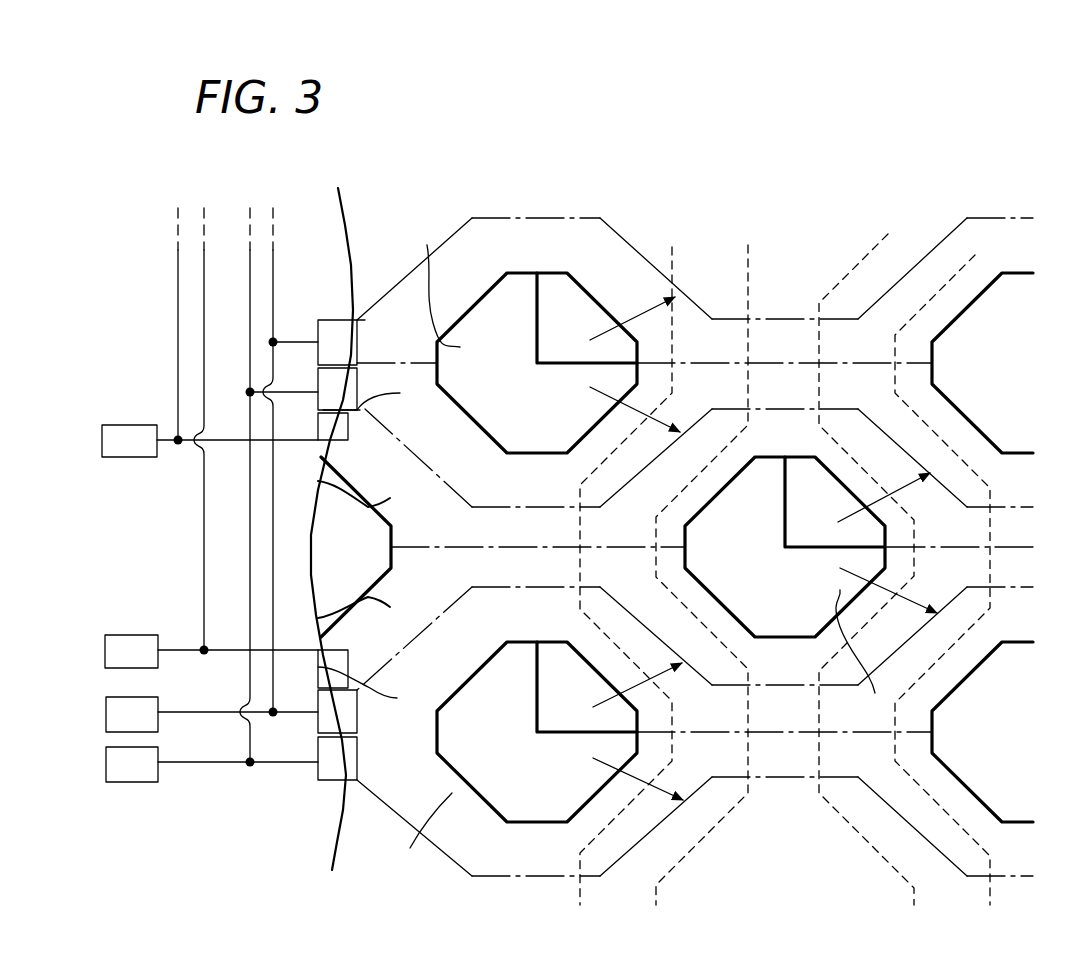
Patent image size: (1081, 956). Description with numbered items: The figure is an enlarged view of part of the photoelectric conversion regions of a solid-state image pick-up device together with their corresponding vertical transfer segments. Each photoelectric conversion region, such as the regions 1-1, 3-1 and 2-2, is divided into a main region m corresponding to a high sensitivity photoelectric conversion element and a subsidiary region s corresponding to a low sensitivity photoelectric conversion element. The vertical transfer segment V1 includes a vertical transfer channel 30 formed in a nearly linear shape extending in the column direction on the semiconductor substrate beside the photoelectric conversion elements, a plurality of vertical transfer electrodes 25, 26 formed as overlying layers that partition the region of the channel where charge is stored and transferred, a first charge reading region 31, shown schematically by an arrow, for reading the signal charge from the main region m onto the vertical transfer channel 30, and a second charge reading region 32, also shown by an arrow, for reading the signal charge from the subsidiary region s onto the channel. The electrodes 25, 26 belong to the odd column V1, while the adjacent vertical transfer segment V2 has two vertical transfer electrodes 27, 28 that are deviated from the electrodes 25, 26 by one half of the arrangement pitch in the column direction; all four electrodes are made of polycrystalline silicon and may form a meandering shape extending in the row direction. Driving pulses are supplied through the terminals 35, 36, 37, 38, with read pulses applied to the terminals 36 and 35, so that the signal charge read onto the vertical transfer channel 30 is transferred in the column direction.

The vertical transfer electrode 25 is at (396, 313).
The vertical transfer electrode 26 is at (318, 422).
The vertical transfer electrode 27 is at (318, 481).
The vertical transfer electrode 28 is at (318, 618).
The vertical transfer channel 30 is at (720, 347).
The first charge reading region 31 is at (618, 392).
The second charge reading region 32 is at (622, 337).
The terminal 35 is at (106, 712).
The terminal 36 is at (106, 762).
The terminal 37 is at (102, 441).
The terminal 38 is at (105, 650).
The photoelectric conversion region 3-1 is at (482, 290).
The photoelectric conversion region 1-1 is at (481, 802).
The photoelectric conversion region 2-2 is at (793, 640).
The main region m is at (639, 546).
The subsidiary region S is at (575, 292).
The vertical transfer segment V1 is at (712, 216).
The vertical transfer segment V2 is at (918, 216).